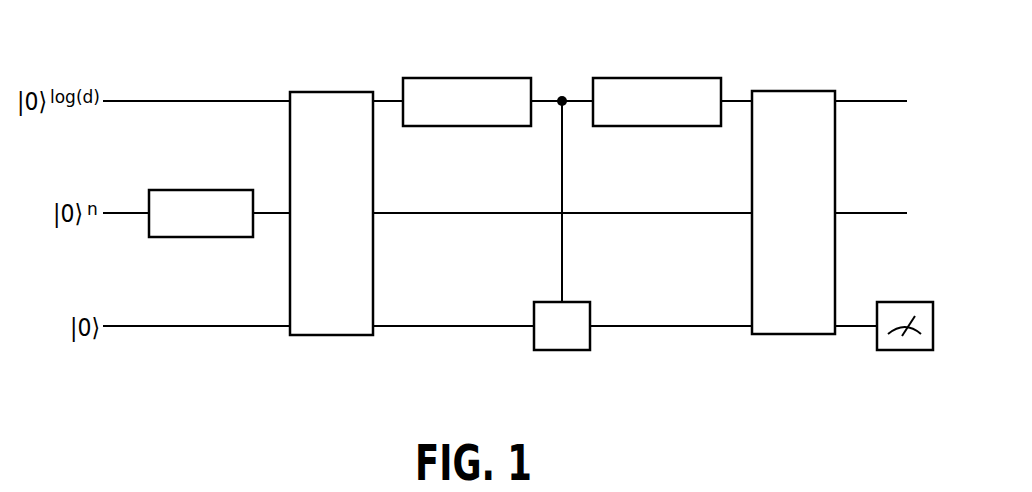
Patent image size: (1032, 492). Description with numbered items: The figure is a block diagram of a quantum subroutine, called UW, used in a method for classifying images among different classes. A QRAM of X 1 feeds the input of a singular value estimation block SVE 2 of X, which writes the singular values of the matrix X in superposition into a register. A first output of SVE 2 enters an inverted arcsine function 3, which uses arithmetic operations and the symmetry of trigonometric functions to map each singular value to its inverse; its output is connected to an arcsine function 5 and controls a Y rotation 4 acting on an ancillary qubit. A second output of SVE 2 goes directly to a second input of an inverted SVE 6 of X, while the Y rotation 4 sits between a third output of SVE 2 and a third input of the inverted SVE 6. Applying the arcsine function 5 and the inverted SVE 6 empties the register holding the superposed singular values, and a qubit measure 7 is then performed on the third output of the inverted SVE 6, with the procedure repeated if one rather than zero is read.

The QRAM of X 1 is at (172, 188).
The SVE of X 2 is at (313, 92).
The inverted arcsine function 3 is at (436, 77).
The Y rotation 4 is at (552, 350).
The arcsine function 5 is at (688, 77).
The inverted SVE of X 6 is at (812, 90).
The qubit measure 7 is at (910, 350).